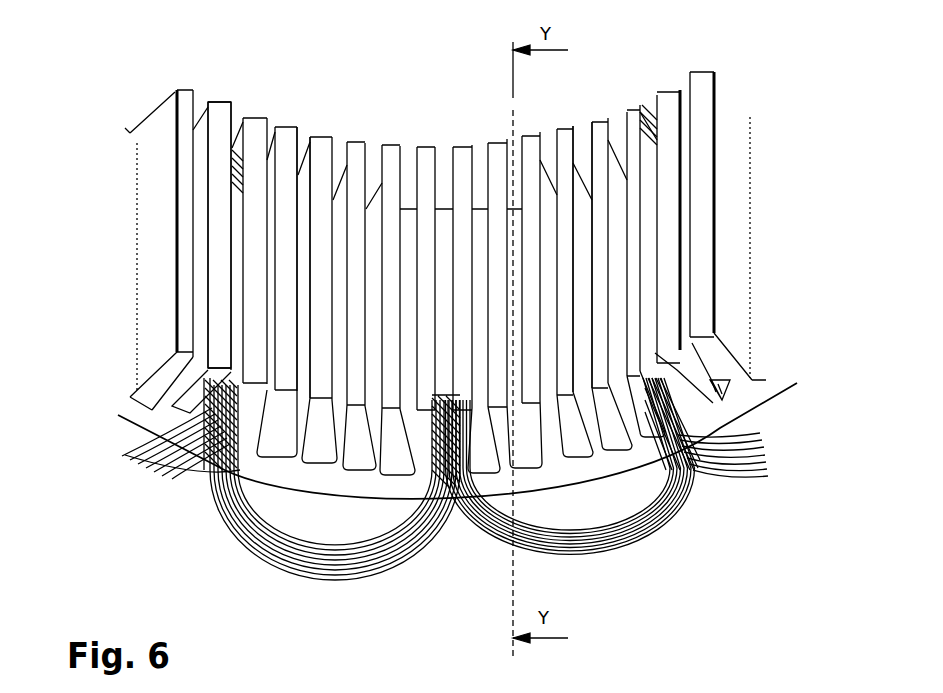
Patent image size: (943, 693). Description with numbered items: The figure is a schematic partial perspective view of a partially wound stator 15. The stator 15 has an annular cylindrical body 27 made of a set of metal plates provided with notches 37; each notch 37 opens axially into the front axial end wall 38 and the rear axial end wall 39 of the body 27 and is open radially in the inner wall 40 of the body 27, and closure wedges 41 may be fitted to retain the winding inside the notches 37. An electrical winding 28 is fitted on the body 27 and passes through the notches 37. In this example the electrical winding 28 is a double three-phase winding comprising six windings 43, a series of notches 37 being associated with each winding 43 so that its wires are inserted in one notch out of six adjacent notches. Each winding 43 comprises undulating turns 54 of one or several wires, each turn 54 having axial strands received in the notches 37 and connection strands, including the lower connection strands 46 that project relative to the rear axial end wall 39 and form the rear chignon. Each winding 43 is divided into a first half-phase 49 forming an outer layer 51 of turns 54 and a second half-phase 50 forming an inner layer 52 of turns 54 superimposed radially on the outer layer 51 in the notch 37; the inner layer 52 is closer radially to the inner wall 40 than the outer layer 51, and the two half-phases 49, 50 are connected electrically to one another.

The stator 15 is at (105, 273).
The annular cylindrical body 27 is at (737, 203).
The electrical winding 28 is at (438, 522).
The notch 37 is at (583, 195).
The front axial end wall 38 is at (221, 100).
The rear axial end wall 39 is at (150, 428).
The inner wall 40 is at (300, 173).
The closure wedge 41 is at (647, 173).
The winding 43 is at (273, 558).
The lower connection strand 46 is at (478, 545).
The first half-phase 49 is at (616, 545).
The second half-phase 50 is at (208, 497).
The outer layer 51 is at (196, 491).
The inner layer 52 is at (227, 527).
The undulating turn 54 is at (680, 492).